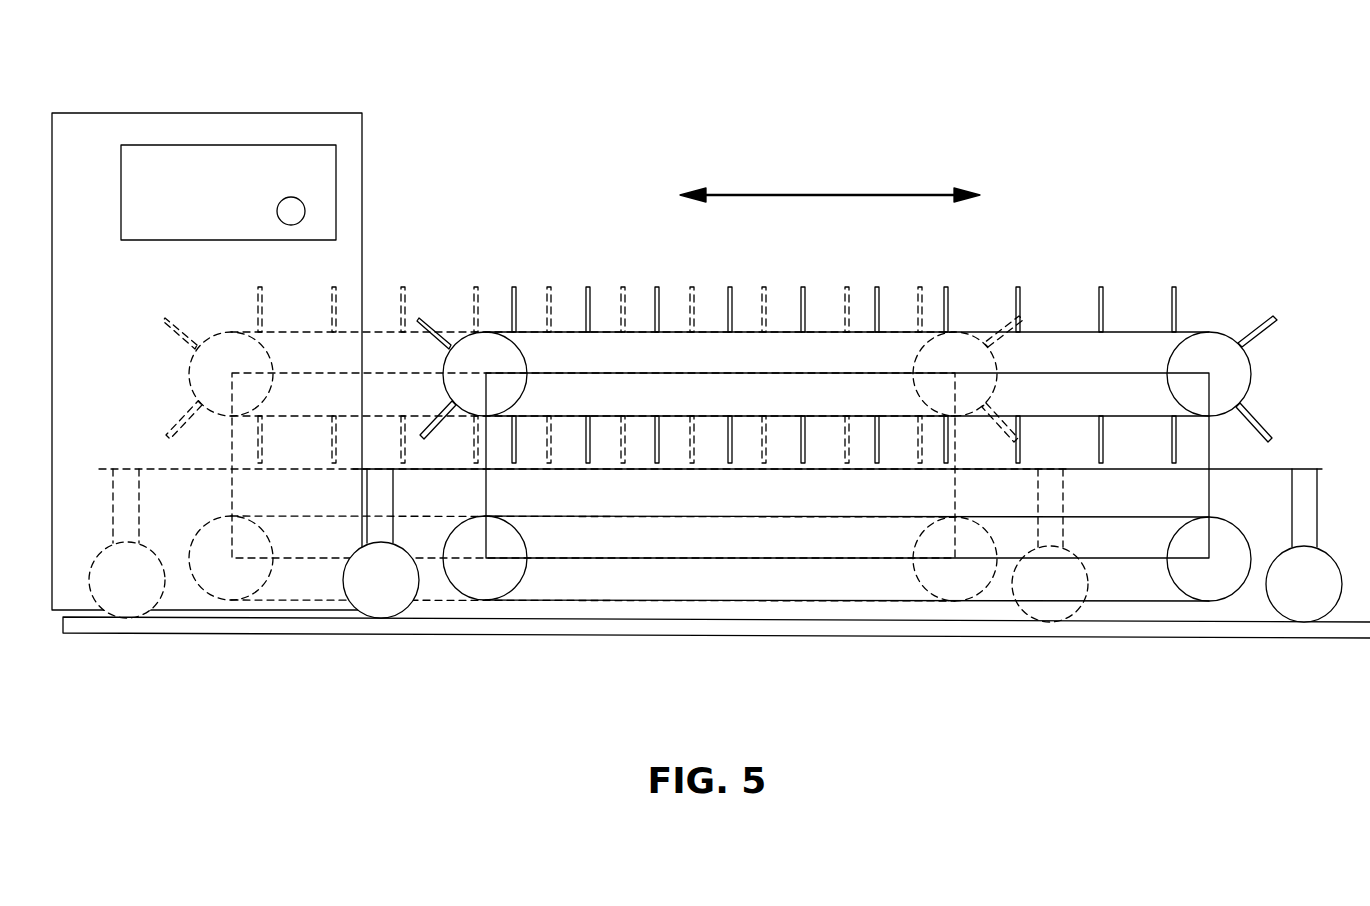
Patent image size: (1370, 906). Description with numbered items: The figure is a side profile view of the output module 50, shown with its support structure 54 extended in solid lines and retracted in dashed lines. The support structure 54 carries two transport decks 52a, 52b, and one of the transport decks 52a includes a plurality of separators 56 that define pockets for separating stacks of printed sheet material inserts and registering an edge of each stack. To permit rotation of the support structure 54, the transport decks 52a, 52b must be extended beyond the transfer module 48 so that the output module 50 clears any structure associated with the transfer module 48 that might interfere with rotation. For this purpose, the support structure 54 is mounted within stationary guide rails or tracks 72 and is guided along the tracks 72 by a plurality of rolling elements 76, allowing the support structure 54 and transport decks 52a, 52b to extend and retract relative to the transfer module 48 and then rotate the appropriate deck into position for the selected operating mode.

The transfer module 48 is at (267, 165).
The output module 50 is at (1095, 257).
The transport deck 52a is at (808, 320).
The transport deck 52b is at (775, 601).
The support structure 54 is at (486, 470).
The separators 56 is at (590, 292).
The guide rails/tracks 72 is at (318, 624).
The rolling elements 76 is at (1300, 597).